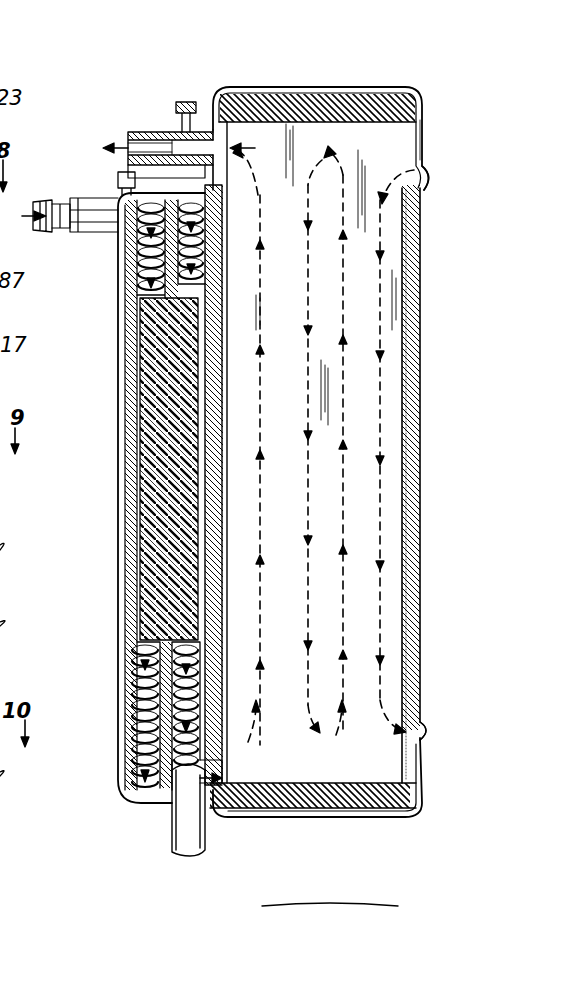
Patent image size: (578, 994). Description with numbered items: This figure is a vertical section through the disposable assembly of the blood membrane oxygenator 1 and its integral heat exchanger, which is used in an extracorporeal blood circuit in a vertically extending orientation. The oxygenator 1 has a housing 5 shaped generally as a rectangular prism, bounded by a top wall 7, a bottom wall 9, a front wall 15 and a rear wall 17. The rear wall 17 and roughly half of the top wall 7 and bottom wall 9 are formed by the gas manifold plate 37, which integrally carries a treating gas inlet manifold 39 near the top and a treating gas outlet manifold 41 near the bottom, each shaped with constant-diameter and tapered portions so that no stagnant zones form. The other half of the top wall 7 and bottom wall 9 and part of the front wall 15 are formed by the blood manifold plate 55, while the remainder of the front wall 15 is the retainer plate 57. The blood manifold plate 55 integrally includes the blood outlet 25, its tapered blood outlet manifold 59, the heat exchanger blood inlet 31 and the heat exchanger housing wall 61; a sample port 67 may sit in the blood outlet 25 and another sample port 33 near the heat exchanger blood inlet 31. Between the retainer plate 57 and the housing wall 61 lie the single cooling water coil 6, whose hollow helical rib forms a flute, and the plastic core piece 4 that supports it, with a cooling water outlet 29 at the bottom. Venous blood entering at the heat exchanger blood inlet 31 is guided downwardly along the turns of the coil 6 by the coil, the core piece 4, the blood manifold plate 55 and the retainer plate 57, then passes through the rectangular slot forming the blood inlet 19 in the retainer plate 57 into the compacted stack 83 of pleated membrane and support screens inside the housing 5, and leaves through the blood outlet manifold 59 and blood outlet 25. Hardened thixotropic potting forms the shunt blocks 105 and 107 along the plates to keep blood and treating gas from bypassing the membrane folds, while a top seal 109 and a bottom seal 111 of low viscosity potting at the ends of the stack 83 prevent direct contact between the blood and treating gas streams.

The blood membrane oxygenator 1 is at (410, 76).
The coil-supporting core piece 4 is at (152, 386).
The housing 5 is at (420, 560).
The cooling fluid-conducting tube 6 is at (140, 727).
The top wall 7 is at (362, 88).
The bottom wall 9 is at (278, 812).
The front wall 15 is at (228, 425).
The rear wall 17 is at (422, 364).
The blood inlet 19 is at (216, 782).
The blood outlet 25 is at (155, 134).
The cooling water outlet 29 is at (185, 822).
The heat exchanger blood inlet 31 is at (70, 236).
The sample port 33 is at (118, 180).
The gas manifold plate 37 is at (424, 140).
The treating gas inlet manifold 39 is at (428, 180).
The treating gas outlet manifold 41 is at (426, 724).
The blood manifold plate 55 is at (128, 448).
The retainer plate 57 is at (228, 538).
The blood outlet manifold 59 is at (222, 138).
The heat exchanger housing wall 61 is at (140, 502).
The sample port 67 is at (183, 100).
The compacted stack 83 is at (380, 484).
The shunt block 105 is at (228, 312).
The shunt block 107 is at (402, 432).
The top seal 109 is at (296, 88).
The bottom seal 111 is at (330, 812).